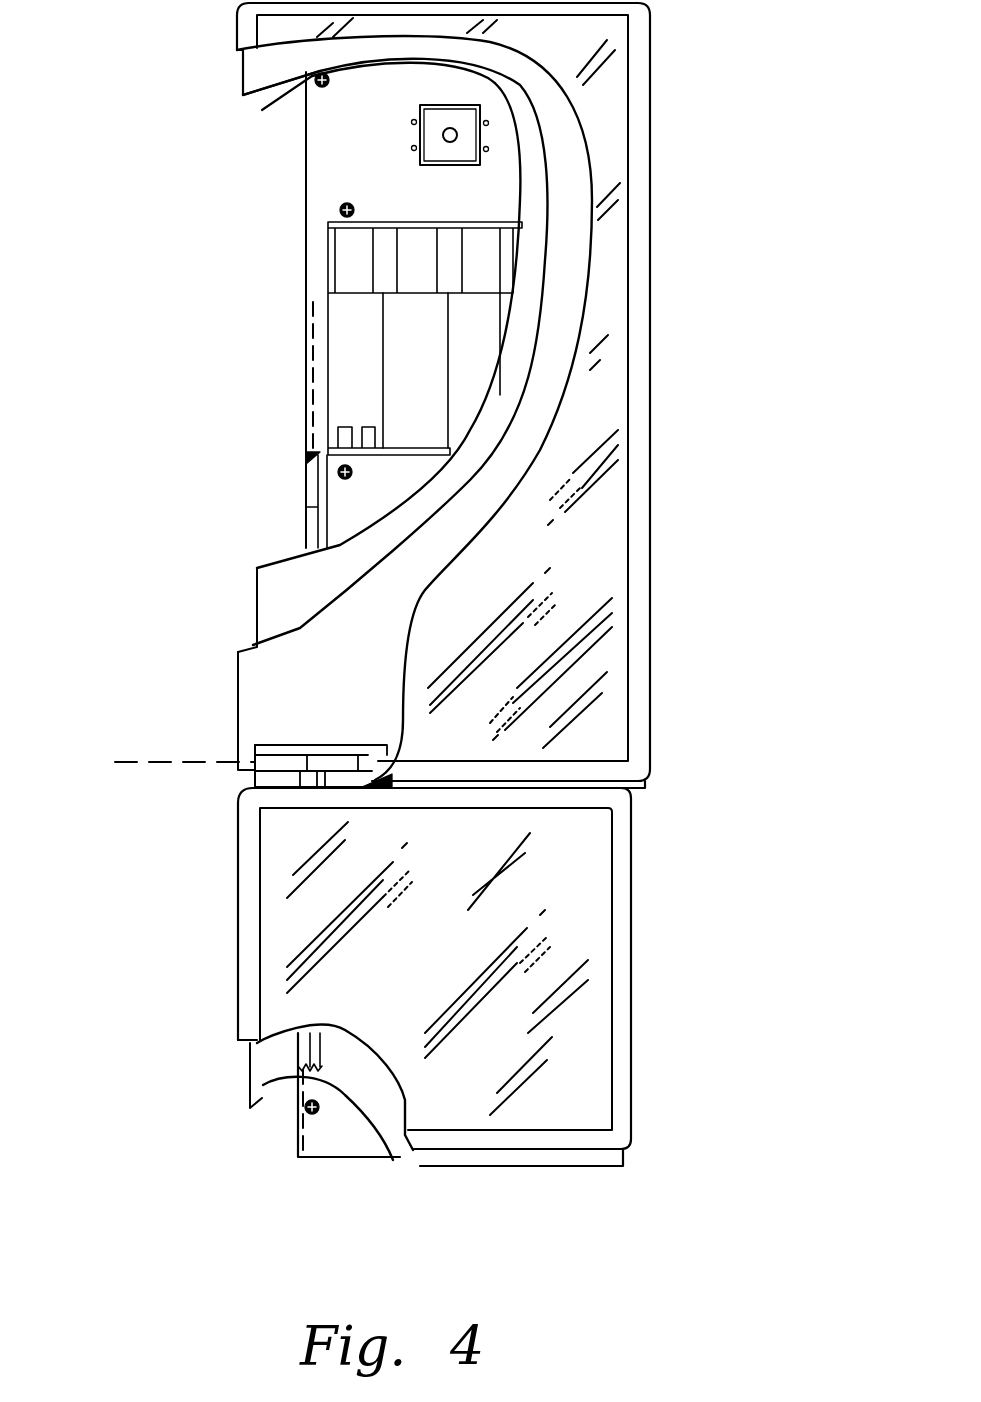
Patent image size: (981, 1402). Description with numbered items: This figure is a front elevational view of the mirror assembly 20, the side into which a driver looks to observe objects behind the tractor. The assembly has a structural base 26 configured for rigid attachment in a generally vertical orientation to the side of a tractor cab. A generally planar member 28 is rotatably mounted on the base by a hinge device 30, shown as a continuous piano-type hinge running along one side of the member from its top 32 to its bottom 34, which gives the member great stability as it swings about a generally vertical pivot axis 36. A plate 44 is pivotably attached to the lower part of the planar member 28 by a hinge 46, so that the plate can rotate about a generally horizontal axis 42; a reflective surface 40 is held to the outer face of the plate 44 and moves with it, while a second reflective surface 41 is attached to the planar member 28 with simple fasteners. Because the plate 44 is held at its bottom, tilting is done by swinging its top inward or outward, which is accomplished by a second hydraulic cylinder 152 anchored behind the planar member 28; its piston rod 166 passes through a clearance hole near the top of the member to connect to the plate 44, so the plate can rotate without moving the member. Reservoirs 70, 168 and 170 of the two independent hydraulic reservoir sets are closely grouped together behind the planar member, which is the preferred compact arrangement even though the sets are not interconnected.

The mirror assembly 20 is at (205, 418).
The structural base 26 is at (327, 158).
The generally planar member 28 is at (273, 595).
The hinge device 30 is at (310, 490).
The top of the member 32 is at (262, 103).
The bottom of the member 34 is at (263, 1085).
The pivot axis 36 is at (312, 333).
The reflective surface 40 is at (603, 528).
The reflective surface 41 is at (578, 915).
The axis 42 is at (133, 762).
The plate 44 is at (258, 690).
The hinge 46 is at (273, 760).
The reservoir 70 is at (487, 376).
The second cylinder 152 is at (437, 167).
The piston rod 166 is at (453, 128).
The reservoir 168 is at (432, 376).
The reservoir 170 is at (374, 376).